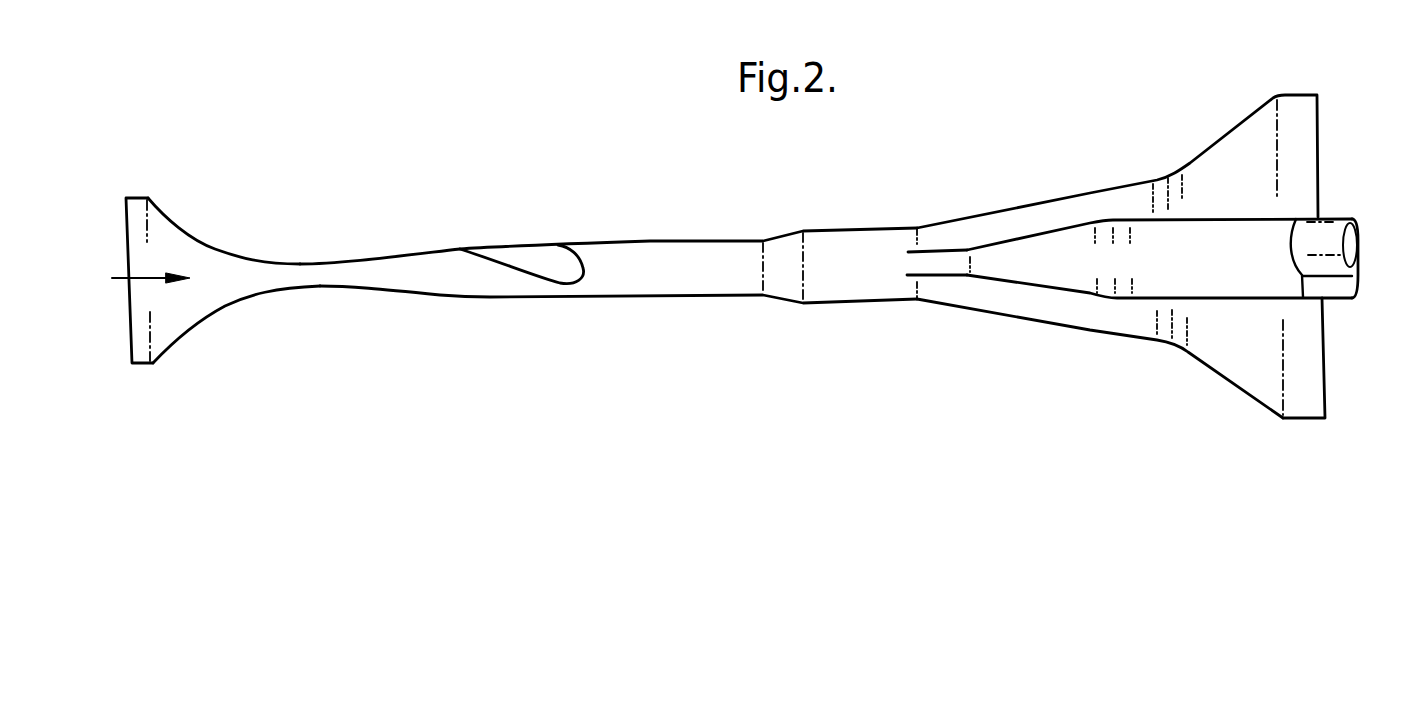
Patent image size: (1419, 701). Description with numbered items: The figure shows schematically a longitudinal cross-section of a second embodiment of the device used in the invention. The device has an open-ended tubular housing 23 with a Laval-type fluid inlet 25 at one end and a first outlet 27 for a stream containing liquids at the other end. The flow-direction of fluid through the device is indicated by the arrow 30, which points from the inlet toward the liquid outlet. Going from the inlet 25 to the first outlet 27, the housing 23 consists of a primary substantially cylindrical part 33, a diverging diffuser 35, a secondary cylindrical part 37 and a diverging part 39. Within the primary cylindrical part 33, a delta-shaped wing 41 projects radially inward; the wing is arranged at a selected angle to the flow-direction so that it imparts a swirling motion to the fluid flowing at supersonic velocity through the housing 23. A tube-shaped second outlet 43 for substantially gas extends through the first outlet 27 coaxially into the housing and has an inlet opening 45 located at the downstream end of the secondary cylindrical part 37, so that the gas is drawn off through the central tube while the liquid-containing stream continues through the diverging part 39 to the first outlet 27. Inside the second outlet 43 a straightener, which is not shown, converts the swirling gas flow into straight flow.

The tubular housing 23 is at (658, 236).
The Laval-type fluid inlet 25 is at (206, 241).
The first outlet 27 is at (1318, 388).
The arrow 30 is at (153, 279).
The primary substantially cylindrical part 33 is at (617, 298).
The diverging diffuser 35 is at (782, 302).
The secondary cylindrical part 37 is at (857, 303).
The diverging part 39 is at (1048, 323).
The delta-shaped wing 41 is at (547, 256).
The tube-shaped second outlet 43 is at (1065, 236).
The inlet opening 45 is at (907, 263).